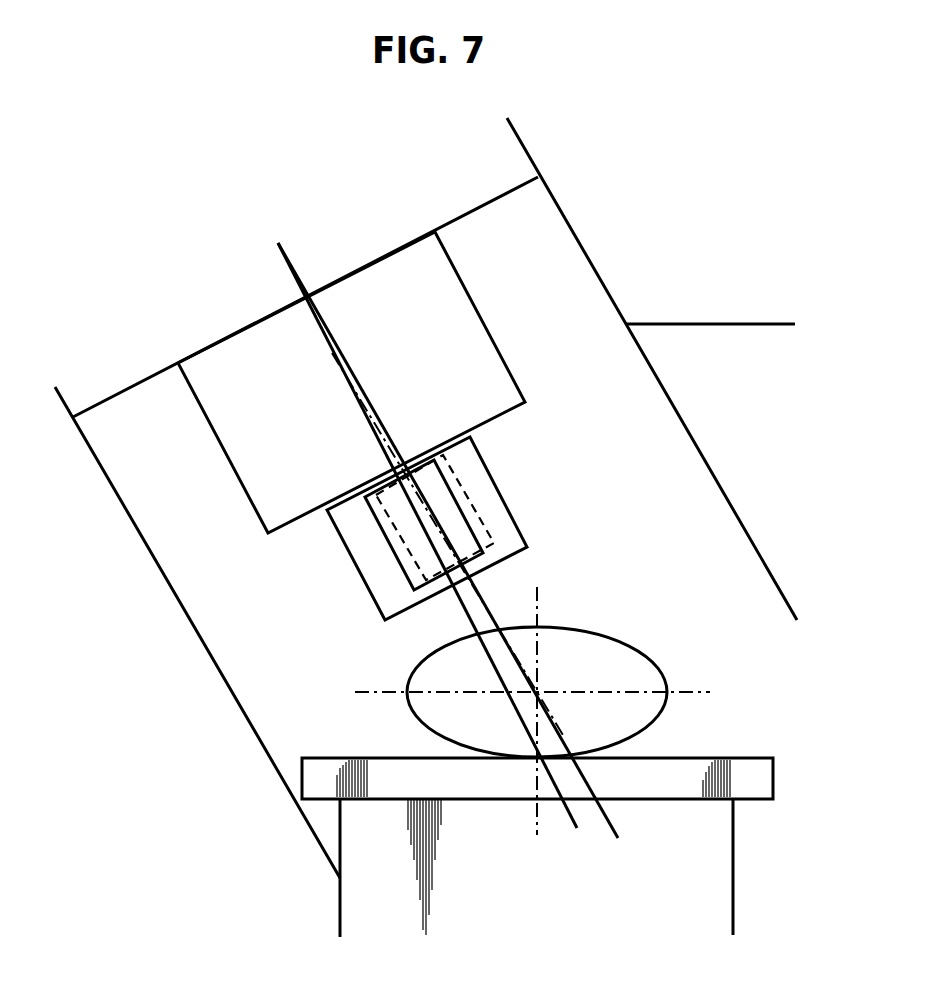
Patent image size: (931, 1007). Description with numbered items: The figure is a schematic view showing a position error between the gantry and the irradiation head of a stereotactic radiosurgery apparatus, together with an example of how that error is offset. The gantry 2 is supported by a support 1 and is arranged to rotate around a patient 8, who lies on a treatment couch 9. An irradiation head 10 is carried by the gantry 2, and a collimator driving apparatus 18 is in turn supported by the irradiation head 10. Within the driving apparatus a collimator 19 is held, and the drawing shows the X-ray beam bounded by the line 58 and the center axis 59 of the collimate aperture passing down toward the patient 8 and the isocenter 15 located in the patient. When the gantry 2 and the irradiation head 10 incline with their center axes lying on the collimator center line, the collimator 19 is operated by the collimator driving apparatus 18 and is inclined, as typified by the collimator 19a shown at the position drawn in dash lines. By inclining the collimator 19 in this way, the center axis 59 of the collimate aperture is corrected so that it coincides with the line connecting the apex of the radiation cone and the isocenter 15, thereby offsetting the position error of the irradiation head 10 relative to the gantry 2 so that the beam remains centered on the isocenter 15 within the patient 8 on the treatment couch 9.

The support 1 is at (715, 324).
The gantry 2 is at (573, 228).
The patient 8 is at (633, 648).
The treatment couch 9 is at (692, 755).
The irradiation head 10 is at (487, 327).
The isocenter 15 is at (540, 690).
The collimator driving apparatus 18 is at (487, 463).
The collimator 19 is at (393, 560).
The inclined collimator 19a is at (475, 508).
The beam edge ray 58 is at (465, 615).
The center axis of the collimate aperture 59 is at (483, 603).